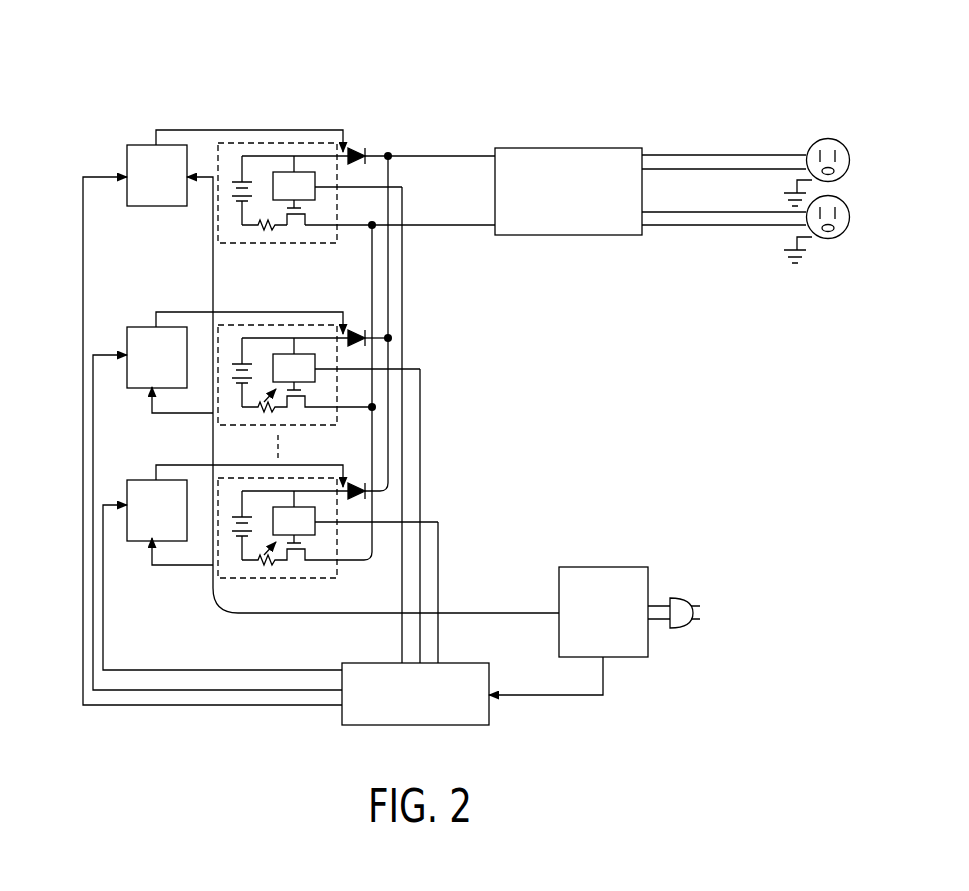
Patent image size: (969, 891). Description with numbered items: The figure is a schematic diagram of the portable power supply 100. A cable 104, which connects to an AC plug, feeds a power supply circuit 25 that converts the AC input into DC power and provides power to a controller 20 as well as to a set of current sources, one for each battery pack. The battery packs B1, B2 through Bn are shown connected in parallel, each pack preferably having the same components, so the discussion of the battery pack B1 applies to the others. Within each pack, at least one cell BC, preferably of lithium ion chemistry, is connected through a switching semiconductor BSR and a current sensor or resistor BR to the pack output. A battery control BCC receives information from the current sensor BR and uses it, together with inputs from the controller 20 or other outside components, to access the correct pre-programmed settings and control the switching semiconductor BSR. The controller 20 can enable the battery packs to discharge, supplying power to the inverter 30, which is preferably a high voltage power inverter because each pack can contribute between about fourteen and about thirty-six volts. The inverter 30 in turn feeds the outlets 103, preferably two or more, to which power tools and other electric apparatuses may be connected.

The portable power supply 100 is at (482, 104).
The controller 20 is at (477, 725).
The power supply circuit 25 is at (635, 657).
The inverter 30 is at (577, 235).
The outlets 103 is at (833, 238).
The cable 104 is at (683, 628).
The battery pack B1 is at (290, 142).
The battery pack B2 is at (314, 425).
The battery pack Bn is at (314, 577).
The cell BC is at (238, 181).
The current sensor or resistor BR is at (277, 206).
The switching semiconductor BSR is at (303, 228).
The battery control BCC is at (294, 186).